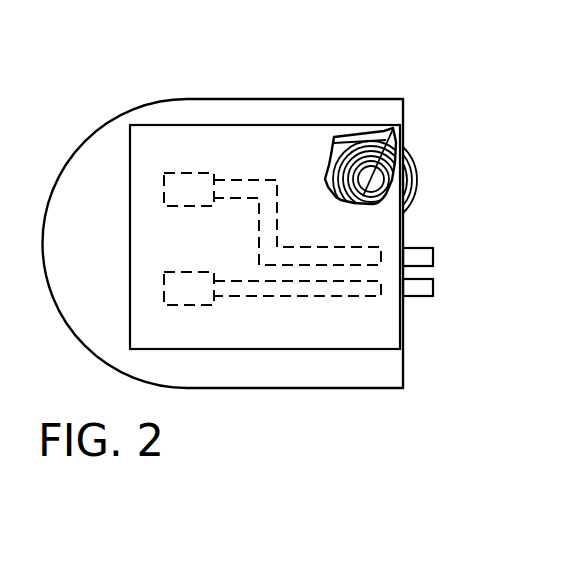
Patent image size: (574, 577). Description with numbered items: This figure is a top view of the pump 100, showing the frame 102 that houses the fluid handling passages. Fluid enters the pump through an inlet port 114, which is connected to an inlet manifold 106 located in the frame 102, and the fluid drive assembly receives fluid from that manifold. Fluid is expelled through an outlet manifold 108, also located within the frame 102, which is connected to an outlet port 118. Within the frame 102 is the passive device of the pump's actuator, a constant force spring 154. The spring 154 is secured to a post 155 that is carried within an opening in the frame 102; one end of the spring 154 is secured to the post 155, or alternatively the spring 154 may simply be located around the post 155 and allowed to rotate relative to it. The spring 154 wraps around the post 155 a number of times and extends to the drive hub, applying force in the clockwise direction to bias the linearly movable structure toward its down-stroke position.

The pump 100 is at (304, 62).
The frame 102 is at (180, 89).
The inlet manifold 106 is at (251, 291).
The outlet manifold 108 is at (218, 171).
The inlet port 114 is at (410, 289).
The outlet port 118 is at (410, 237).
The constant force spring 154 is at (411, 184).
The post 155 is at (385, 122).